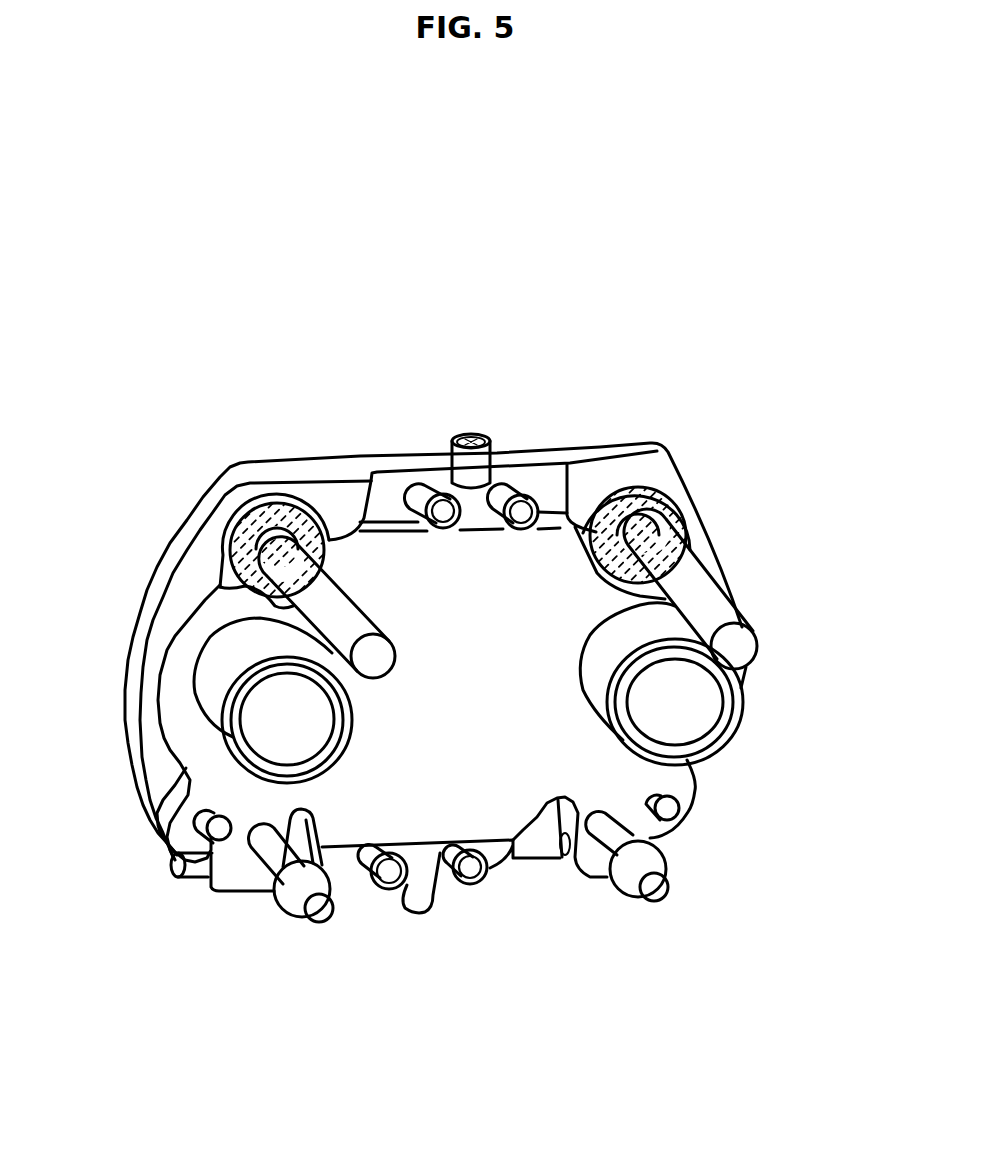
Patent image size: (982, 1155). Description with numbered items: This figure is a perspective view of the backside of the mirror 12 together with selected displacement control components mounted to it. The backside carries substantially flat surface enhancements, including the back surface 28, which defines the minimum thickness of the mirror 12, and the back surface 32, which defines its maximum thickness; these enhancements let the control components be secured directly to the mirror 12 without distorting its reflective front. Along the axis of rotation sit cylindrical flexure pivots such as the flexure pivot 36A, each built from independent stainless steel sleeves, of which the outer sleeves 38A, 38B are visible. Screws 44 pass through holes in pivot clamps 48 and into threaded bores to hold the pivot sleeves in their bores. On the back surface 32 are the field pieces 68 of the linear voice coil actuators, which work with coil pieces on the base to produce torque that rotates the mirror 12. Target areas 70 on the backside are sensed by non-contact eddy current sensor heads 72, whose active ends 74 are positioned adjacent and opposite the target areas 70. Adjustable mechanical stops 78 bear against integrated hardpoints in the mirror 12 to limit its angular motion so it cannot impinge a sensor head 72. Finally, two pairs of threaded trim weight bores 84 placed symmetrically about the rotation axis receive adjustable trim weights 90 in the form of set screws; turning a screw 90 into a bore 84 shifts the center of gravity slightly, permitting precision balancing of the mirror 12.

The mirror 12 is at (173, 558).
The back surface 28 is at (700, 545).
The back surface 32 is at (218, 782).
The flexure pivot 36A is at (471, 426).
The outer sleeve 38A is at (472, 463).
The outer sleeve 38B is at (407, 924).
The screw 44 is at (438, 510).
The pivot clamp 48 is at (473, 503).
The field piece 68 is at (248, 637).
The target area 70 is at (284, 522).
The displacement sensor head 72 is at (282, 565).
The active end 74 is at (291, 500).
The adjustable mechanical stop 78 is at (268, 902).
The threaded trim weight bore 84 is at (562, 862).
The adjustable trim weight 90 is at (216, 834).